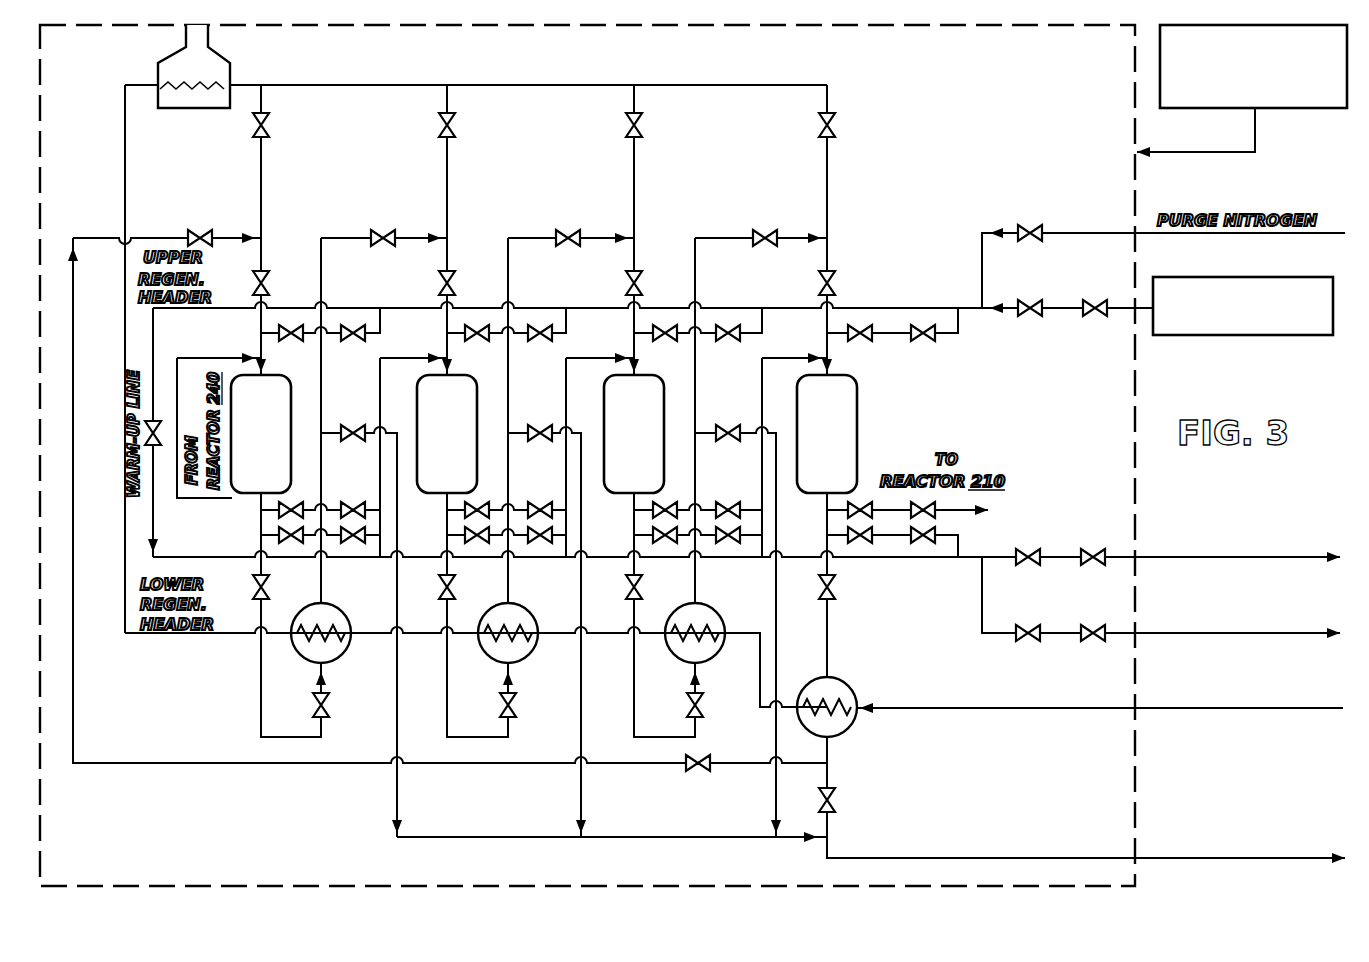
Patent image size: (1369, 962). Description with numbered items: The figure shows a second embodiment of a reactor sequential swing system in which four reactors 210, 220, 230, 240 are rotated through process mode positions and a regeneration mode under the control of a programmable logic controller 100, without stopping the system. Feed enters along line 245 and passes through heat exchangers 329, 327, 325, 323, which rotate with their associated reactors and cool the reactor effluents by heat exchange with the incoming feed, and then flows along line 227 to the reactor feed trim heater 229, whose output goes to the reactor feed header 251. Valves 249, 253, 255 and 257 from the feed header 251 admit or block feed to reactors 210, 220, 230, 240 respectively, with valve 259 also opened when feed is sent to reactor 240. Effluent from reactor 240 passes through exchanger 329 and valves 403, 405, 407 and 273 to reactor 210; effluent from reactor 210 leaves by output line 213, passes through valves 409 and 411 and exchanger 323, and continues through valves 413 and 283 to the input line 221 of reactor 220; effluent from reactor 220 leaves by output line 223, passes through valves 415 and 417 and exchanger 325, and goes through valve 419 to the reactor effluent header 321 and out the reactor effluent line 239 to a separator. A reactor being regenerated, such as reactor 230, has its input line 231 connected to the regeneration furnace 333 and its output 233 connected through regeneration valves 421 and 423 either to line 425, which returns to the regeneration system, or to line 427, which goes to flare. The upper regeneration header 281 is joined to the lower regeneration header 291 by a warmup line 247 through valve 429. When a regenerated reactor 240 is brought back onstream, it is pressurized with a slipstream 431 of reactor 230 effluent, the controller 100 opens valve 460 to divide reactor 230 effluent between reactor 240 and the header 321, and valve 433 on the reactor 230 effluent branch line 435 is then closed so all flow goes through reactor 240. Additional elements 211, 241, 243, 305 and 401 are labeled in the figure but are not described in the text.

The programmable logic controller 100 is at (1284, 108).
The reactor 210 is at (286, 378).
The reactor 220 is at (471, 378).
The reactor 230 is at (659, 378).
The reactor 240 is at (844, 378).
The reactor 210 regeneration inlet line 211 is at (301, 327).
The input line 221 is at (488, 327).
The input line 231 is at (676, 327).
The reactor 240 regeneration inlet line 241 is at (874, 327).
The output line 213 is at (259, 533).
The output line 223 is at (446, 533).
The output 233 is at (631, 533).
The reactor 240 outlet valves 243 is at (822, 539).
The line 227 is at (125, 312).
The reactor feed trim heater 229 is at (230, 68).
The reactor effluent line 239 is at (1111, 858).
The feed line 245 is at (668, 304).
The warmup line 247 is at (153, 340).
The valve 249 is at (270, 132).
The reactor feed header 251 is at (617, 85).
The inlet valve 253 is at (457, 132).
The valve 255 is at (643, 132).
The valve 257 is at (836, 132).
The valve 259 is at (840, 286).
The valve 273 is at (270, 286).
The upper regeneration header 281 is at (582, 308).
The valve 283 is at (456, 286).
The lower regeneration header 291 is at (218, 559).
The regeneration valve 305 is at (864, 338).
The reactor effluent header 321 is at (709, 839).
The heat exchanger 323 is at (347, 626).
The heat exchanger 325 is at (527, 626).
The heat exchanger 327 is at (720, 626).
The heat exchanger 329 is at (854, 694).
The regeneration furnace 333 is at (1286, 277).
The bypass line 401 is at (172, 764).
The valve 403 is at (836, 588).
The valve 405 is at (710, 759).
The valve 407 is at (212, 231).
The valve 409 is at (269, 586).
The valve 411 is at (328, 710).
The valve 413 is at (395, 231).
The valve 415 is at (445, 586).
The valve 417 is at (513, 710).
The valve 419 is at (540, 425).
The regeneration valve 421 is at (642, 586).
The regeneration valve 423 is at (719, 647).
The line 425 is at (1120, 556).
The line 427 is at (1120, 631).
The valve 429 is at (156, 424).
The slipstream 431 is at (762, 374).
The valve 433 is at (733, 428).
The reactor effluent branch line 435 is at (706, 435).
The valve 460 is at (766, 232).